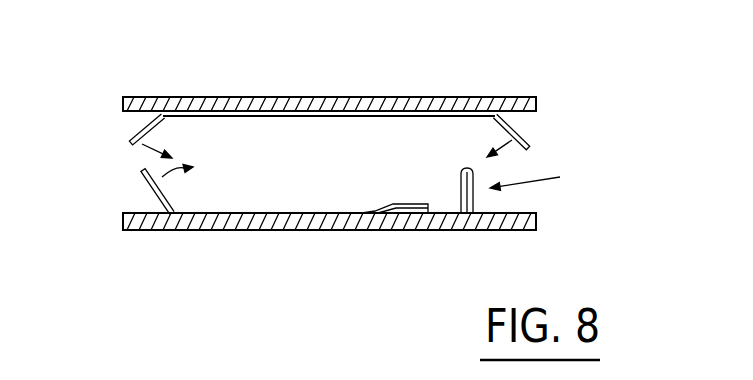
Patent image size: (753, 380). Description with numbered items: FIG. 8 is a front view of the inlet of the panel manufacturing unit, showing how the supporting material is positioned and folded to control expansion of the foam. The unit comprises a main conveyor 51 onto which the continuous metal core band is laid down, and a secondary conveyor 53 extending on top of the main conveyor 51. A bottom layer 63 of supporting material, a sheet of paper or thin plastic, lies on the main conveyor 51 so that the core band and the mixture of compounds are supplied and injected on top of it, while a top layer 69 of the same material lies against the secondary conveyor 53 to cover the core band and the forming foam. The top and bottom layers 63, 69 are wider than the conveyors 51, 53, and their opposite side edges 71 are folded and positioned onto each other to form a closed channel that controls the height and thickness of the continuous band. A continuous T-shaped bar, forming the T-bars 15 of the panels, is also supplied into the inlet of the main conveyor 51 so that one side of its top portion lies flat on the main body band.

The T-bar 15 is at (527, 207).
The main conveyor 51 is at (372, 233).
The secondary conveyor 53 is at (348, 104).
The bottom layer 63 is at (274, 213).
The top layer 69 is at (268, 121).
The side edges 71 is at (147, 178).